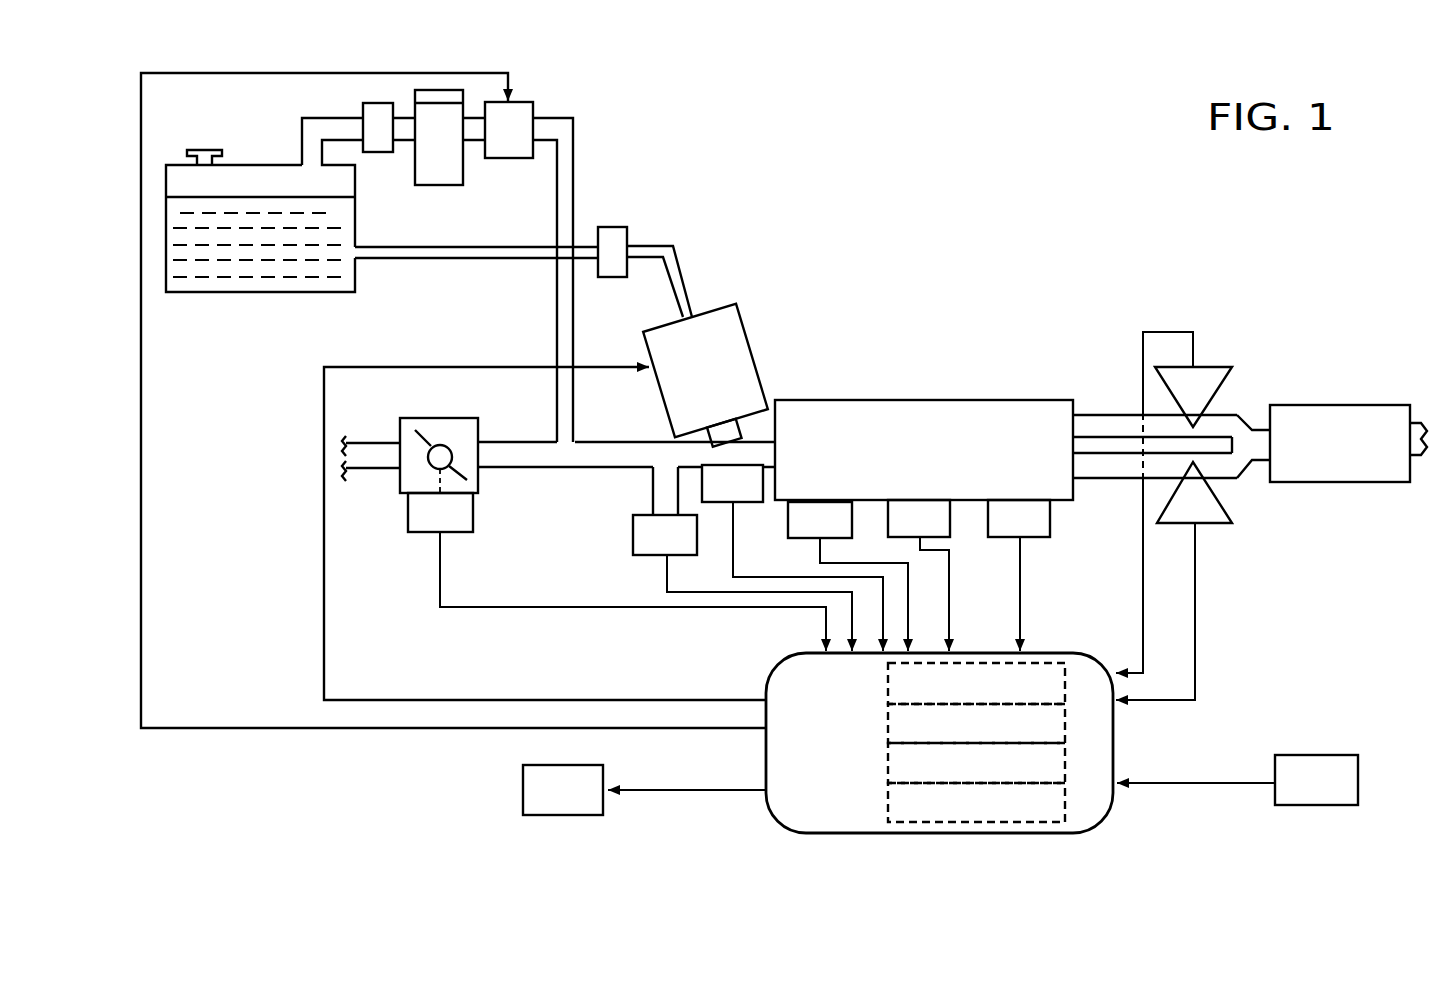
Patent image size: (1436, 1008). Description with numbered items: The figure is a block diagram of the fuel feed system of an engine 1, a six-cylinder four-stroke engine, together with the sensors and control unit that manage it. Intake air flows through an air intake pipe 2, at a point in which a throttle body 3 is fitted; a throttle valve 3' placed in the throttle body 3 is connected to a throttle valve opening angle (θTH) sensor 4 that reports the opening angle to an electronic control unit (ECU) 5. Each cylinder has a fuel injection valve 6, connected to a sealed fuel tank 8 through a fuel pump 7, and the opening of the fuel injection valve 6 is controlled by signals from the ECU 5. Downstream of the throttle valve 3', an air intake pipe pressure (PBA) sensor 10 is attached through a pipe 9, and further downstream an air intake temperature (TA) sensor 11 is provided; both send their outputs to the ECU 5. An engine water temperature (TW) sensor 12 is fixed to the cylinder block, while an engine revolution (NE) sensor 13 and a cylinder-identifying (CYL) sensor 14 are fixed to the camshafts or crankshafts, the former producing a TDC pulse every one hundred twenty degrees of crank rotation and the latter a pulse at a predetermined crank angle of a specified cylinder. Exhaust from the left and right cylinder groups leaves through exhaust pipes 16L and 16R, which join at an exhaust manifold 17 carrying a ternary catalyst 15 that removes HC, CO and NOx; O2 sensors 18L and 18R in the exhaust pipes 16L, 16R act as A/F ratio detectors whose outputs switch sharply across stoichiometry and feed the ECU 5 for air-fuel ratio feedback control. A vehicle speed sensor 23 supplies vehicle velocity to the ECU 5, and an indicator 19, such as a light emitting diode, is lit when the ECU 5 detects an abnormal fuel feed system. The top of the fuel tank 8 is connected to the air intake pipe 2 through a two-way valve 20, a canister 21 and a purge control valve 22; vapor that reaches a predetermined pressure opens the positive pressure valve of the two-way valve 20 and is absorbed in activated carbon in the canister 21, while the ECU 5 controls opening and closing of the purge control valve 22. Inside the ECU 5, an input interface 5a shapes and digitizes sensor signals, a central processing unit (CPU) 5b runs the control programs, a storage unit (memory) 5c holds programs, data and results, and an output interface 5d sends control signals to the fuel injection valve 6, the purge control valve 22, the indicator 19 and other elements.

The engine 1 is at (868, 398).
The air intake pipe 2 is at (572, 468).
The throttle body 3 is at (371, 483).
The throttle valve 3' is at (439, 433).
The throttle valve opening angle (θTH) sensor 4 is at (473, 532).
The electronic control unit (ECU) 5 is at (891, 756).
The input interface 5a is at (1065, 677).
The central processing unit (CPU) 5b is at (1065, 727).
The storage unit (memory) 5c is at (1065, 760).
The output interface 5d is at (1057, 827).
The fuel injection valve 6 is at (750, 343).
The fuel pump 7 is at (628, 228).
The fuel tank 8 is at (253, 293).
The pipe 9 is at (653, 500).
The air intake pipe pressure (PBA) sensor 10 is at (632, 535).
The air intake temperature (TA) sensor 11 is at (717, 502).
The engine water temperature (TW) sensor 12 is at (788, 508).
The engine revolution (NE) sensor 13 is at (950, 517).
The cylinder-identifying (CYL) sensor 14 is at (1050, 527).
The ternary catalyst 15 is at (1287, 405).
The exhaust pipe 16L is at (1118, 415).
The exhaust pipe 16R is at (1107, 478).
The exhaust manifold 17 is at (1243, 472).
The O2 sensor 18L is at (1210, 363).
The O2 sensor 18R is at (1213, 523).
The indicator 19 is at (560, 815).
The two-way valve 20 is at (383, 152).
The canister 21 is at (463, 167).
The purge control valve 22 is at (543, 102).
The vehicle speed sensor 23 is at (1330, 805).